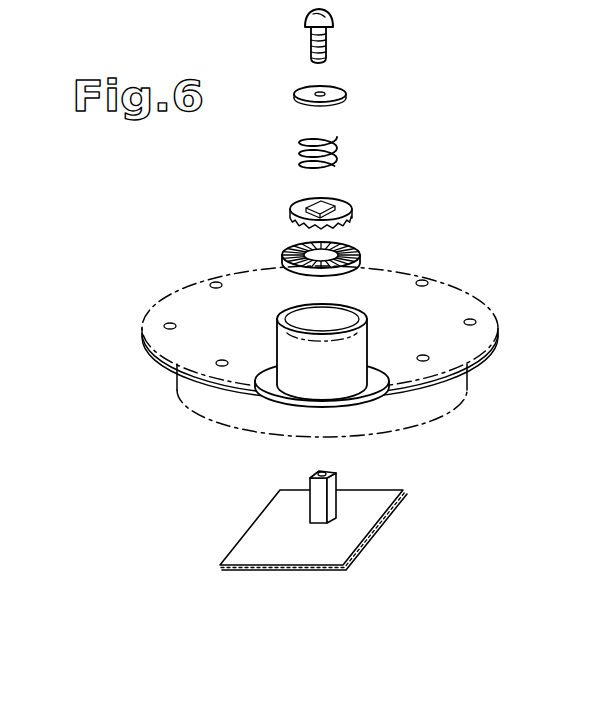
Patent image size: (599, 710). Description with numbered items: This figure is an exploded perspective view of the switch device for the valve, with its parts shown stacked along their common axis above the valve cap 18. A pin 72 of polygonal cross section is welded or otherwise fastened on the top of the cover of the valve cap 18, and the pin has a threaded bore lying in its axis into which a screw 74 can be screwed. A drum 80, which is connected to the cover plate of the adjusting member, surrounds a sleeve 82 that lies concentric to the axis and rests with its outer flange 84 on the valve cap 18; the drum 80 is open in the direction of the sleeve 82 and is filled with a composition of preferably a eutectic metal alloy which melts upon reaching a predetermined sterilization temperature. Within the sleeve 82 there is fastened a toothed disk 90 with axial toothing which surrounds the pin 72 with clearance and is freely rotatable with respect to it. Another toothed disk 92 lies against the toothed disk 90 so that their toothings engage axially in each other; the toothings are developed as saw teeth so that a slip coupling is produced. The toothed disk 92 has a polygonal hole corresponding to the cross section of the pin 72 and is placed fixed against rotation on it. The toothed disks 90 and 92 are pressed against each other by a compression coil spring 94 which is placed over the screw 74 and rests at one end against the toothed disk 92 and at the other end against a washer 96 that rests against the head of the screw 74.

The screw 74 is at (326, 41).
The washer 96 is at (343, 92).
The compression coil spring 94 is at (303, 158).
The toothed disk 92 is at (341, 206).
The toothed disk 90 is at (357, 249).
The sleeve 82 is at (356, 347).
The outer flange 84 is at (373, 377).
The drum 80 is at (200, 407).
The pin 72 is at (314, 494).
The valve cap 18 is at (358, 540).